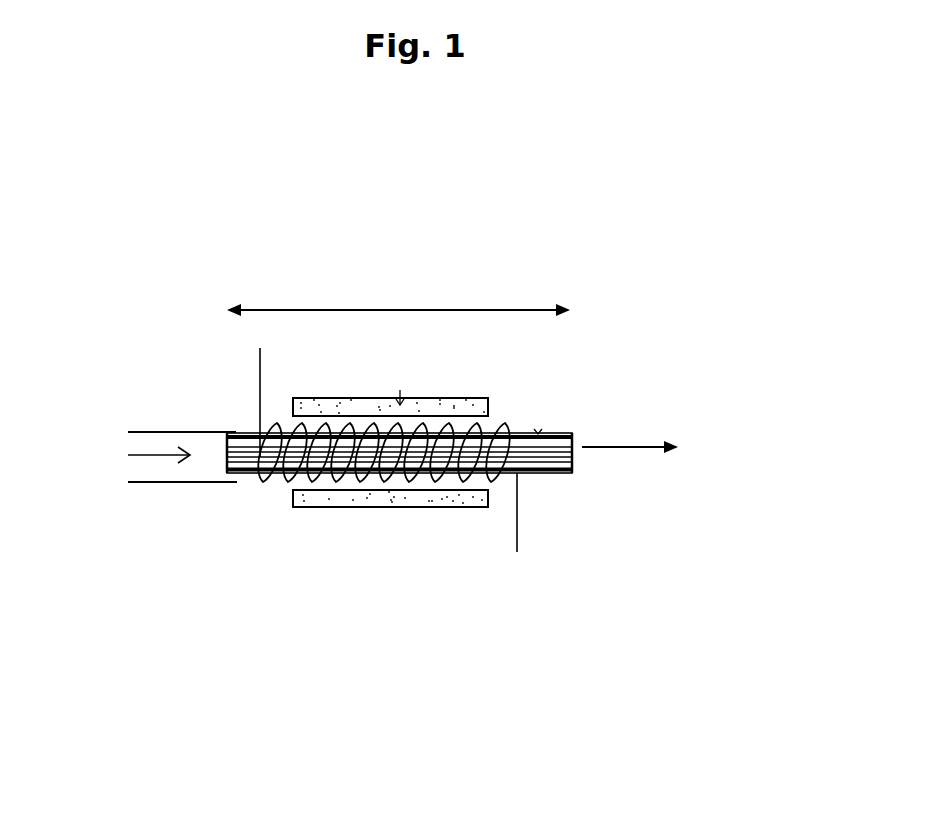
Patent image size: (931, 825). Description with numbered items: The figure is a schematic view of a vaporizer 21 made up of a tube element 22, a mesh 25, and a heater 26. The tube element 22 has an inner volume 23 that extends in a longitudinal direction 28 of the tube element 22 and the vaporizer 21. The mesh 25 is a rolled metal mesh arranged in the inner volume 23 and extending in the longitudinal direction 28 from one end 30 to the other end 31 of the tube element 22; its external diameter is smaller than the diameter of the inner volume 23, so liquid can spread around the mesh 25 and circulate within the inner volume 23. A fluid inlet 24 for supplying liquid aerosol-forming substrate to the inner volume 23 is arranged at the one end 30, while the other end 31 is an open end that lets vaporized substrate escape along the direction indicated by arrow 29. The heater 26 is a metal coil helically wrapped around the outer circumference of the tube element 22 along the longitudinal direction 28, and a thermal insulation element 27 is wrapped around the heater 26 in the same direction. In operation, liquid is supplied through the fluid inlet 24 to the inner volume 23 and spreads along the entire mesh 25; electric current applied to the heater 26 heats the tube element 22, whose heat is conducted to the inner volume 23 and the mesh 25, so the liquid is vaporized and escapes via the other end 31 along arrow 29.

The vaporizer 21 is at (336, 577).
The tube element 22 is at (451, 511).
The inner volume 23 is at (687, 426).
The fluid inlet 24 is at (125, 460).
The mesh 25 is at (442, 545).
The heater 26 is at (596, 593).
The thermal insulation element 27 is at (493, 412).
The longitudinal direction 28 is at (471, 288).
The arrow 29 is at (669, 524).
The one end 30 is at (220, 465).
The other end 31 is at (463, 510).